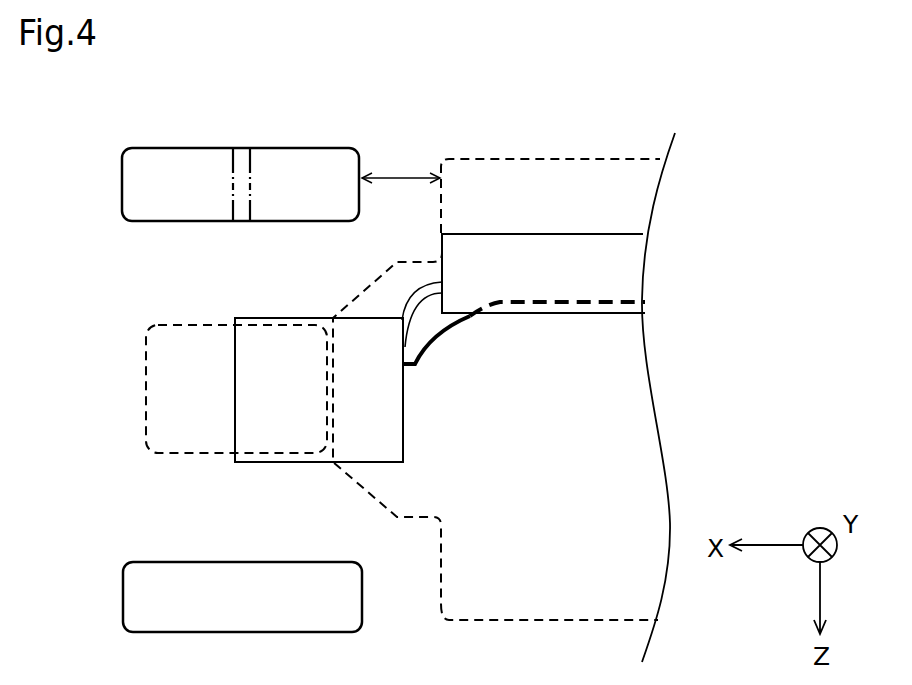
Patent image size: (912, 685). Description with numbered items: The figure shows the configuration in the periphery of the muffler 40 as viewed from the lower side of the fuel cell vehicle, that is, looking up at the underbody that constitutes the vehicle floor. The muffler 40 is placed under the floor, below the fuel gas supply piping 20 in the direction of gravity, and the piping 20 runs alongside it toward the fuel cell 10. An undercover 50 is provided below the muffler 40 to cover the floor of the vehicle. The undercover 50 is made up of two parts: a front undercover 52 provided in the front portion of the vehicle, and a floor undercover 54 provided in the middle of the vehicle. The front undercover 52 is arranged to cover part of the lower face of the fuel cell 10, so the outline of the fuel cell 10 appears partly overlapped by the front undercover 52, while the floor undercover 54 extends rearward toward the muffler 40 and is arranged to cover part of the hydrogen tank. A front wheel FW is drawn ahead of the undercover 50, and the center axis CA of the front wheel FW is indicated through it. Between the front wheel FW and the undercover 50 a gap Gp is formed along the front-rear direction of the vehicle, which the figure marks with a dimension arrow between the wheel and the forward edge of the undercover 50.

The fuel cell 10 is at (235, 432).
The fuel gas supply piping 20 is at (598, 305).
The muffler 40 is at (580, 275).
The undercover 50 is at (286, 418).
The front undercover 52 is at (278, 323).
The floor undercover 54 is at (362, 293).
The center axis of front wheel CA is at (240, 148).
The front wheel FW is at (320, 148).
The gap Gp is at (398, 172).